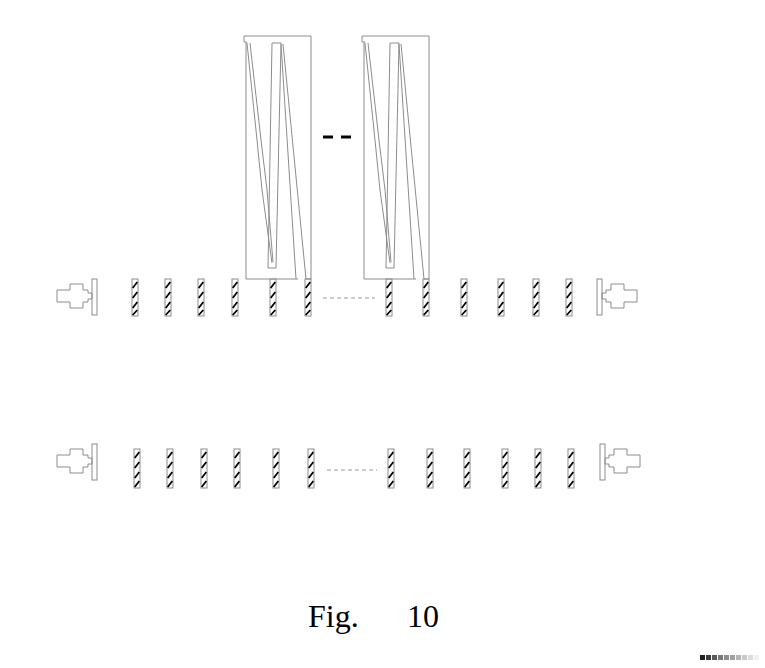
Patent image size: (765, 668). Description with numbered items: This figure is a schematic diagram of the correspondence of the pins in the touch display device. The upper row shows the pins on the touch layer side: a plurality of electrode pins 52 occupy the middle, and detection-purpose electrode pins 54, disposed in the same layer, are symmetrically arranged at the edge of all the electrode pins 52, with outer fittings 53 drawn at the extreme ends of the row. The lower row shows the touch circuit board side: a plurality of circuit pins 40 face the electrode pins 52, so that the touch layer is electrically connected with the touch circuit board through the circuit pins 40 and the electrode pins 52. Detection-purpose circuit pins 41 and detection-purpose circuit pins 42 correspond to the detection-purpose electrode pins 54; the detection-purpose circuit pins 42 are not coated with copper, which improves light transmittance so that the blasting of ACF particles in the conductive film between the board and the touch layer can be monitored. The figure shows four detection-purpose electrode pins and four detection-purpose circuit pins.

The circuit pins 40 is at (430, 488).
The detection-purpose circuit pin 41 is at (137, 488).
The detection-purpose circuit pin 42 is at (204, 488).
The electrode pins 52 is at (426, 316).
The connector fitting / latch 53 is at (77, 309).
The detection-purpose electrode pins 54 is at (135, 316).